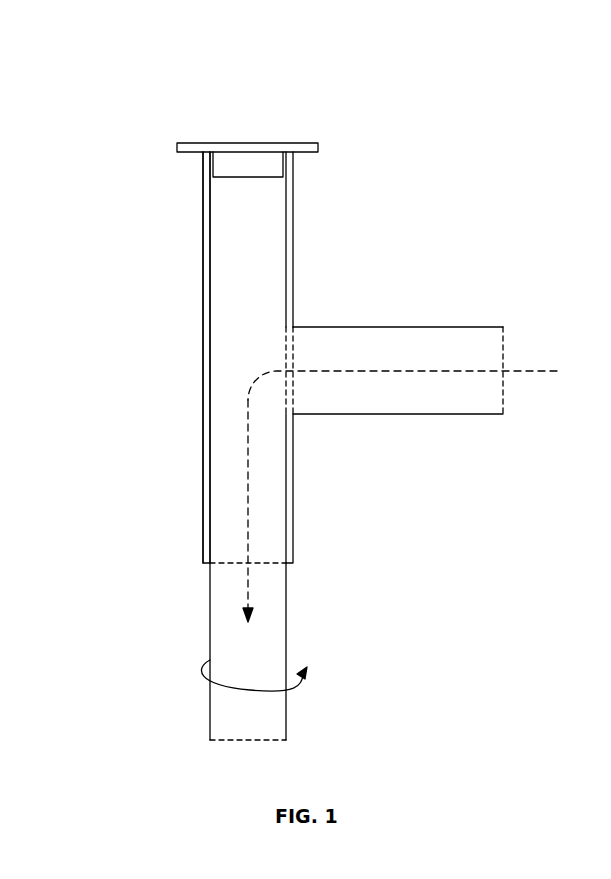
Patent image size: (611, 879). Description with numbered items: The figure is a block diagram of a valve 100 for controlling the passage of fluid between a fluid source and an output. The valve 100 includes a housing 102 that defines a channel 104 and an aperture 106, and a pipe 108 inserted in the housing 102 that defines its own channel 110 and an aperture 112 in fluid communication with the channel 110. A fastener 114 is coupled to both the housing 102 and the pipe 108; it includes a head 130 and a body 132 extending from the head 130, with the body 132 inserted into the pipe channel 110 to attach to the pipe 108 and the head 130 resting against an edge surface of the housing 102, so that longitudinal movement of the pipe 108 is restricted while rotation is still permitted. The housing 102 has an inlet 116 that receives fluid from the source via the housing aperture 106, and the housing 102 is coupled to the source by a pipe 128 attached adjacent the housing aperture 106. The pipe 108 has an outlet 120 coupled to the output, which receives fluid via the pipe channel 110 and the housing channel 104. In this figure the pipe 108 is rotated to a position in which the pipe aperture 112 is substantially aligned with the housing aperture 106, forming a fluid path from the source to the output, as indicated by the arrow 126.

The valve 100 is at (152, 72).
The housing 102 is at (203, 212).
The channel 104 is at (268, 284).
The aperture 106 is at (295, 333).
The pipe 108 is at (286, 218).
The channel 110 is at (268, 662).
The aperture 112 is at (287, 390).
The fastener 114 is at (258, 119).
The inlet 116 is at (330, 344).
The outlet 120 is at (232, 728).
The arrow 126 is at (455, 371).
The pipe 128 is at (414, 415).
The head 130 is at (308, 143).
The body 132 is at (218, 158).